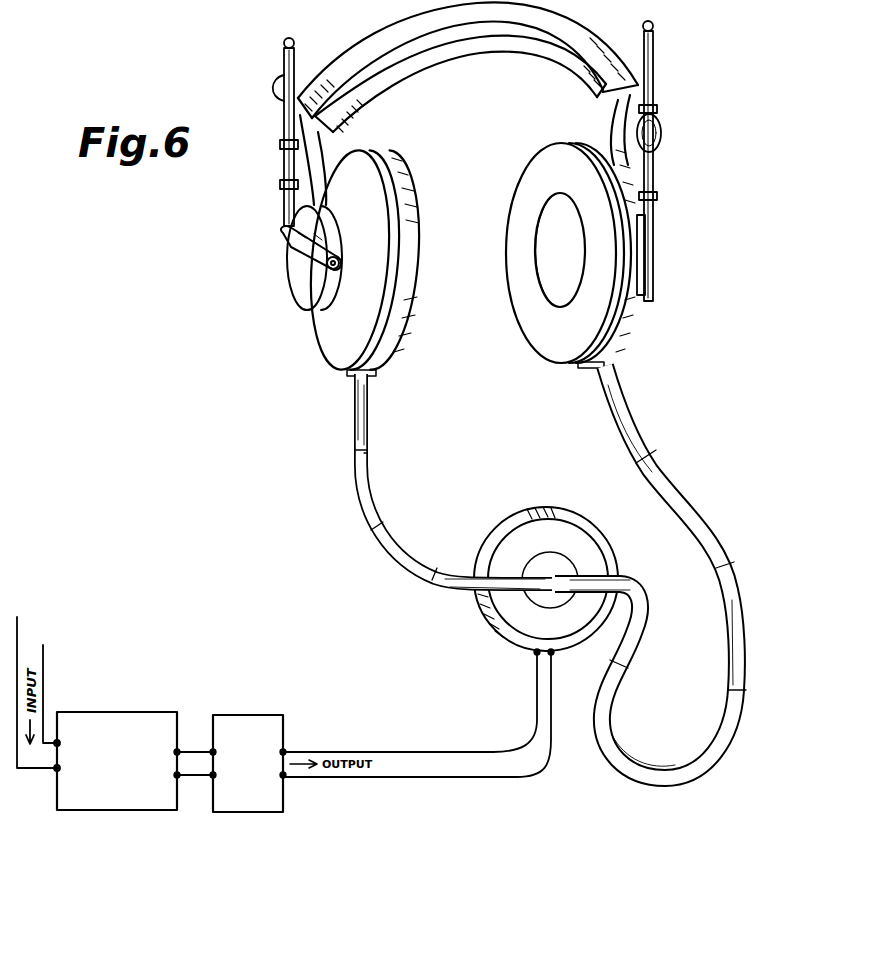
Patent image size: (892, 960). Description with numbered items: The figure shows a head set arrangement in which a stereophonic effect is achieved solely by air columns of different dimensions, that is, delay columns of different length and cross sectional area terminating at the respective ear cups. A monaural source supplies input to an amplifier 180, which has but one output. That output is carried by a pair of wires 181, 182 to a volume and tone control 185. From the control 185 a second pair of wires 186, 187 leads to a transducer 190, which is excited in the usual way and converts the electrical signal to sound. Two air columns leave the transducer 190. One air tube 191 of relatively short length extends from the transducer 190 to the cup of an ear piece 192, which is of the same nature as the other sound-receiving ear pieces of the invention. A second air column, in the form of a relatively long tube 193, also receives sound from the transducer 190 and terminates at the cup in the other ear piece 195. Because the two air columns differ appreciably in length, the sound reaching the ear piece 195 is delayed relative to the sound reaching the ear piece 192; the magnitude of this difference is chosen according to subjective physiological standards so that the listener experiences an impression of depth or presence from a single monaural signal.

The amplifier 180 is at (93, 720).
The wire 181 is at (190, 777).
The wire 182 is at (193, 752).
The volume and tone control 185 is at (271, 722).
The wire 186 is at (412, 750).
The wire 187 is at (432, 777).
The transducer 190 is at (527, 625).
The air tube 191 is at (358, 424).
The ear piece 192 is at (383, 150).
The tube 193 is at (636, 760).
The ear piece 195 is at (617, 320).